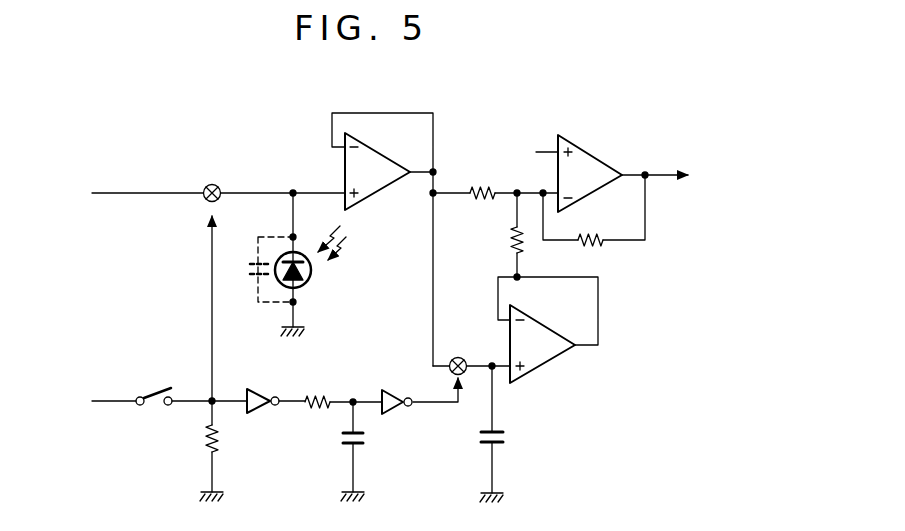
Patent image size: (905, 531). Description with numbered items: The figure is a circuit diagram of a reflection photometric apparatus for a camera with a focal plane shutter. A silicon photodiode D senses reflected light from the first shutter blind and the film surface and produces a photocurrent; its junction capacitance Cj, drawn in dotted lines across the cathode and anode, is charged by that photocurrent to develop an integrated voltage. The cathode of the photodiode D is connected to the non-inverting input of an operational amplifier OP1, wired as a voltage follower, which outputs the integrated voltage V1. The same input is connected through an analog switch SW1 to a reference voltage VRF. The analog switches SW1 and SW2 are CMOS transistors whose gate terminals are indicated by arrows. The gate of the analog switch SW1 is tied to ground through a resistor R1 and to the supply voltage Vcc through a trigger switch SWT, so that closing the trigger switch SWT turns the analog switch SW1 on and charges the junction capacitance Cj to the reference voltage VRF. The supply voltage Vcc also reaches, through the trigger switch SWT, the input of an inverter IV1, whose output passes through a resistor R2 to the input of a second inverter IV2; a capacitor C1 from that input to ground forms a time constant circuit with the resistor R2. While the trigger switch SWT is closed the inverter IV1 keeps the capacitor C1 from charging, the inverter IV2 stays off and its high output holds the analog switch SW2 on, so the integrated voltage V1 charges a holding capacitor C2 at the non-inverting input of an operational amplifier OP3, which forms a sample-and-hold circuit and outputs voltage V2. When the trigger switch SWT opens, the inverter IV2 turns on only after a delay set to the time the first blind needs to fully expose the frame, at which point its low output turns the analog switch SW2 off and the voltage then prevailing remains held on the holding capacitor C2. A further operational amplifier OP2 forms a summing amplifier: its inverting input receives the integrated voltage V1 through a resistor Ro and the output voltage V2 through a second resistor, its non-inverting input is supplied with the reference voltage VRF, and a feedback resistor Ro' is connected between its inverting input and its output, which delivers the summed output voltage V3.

The reference voltage VRF is at (198, 193).
The analog switch SW1 is at (210, 185).
The junction capacitance Cj is at (250, 272).
The silicon photodiode D is at (308, 274).
The operational amplifier OP1 is at (382, 161).
The integrated voltage V1 is at (419, 258).
The resistor Ro is at (495, 182).
The operational amplifier OP2 is at (559, 173).
The output voltage of summing amplifier V3 is at (652, 164).
The resistor Ro' is at (594, 210).
The operational amplifier OP3 is at (548, 330).
The output voltage V2 is at (579, 333).
The analog switch SW2 is at (459, 360).
The holding capacitor C2 is at (504, 437).
The supply voltage Vcc is at (93, 401).
The trigger switch SWT is at (150, 396).
The resistor R1 is at (219, 440).
The inverter IV1 is at (262, 395).
The resistor R2 is at (319, 396).
The capacitor C1 is at (366, 438).
The inverter IV2 is at (396, 395).